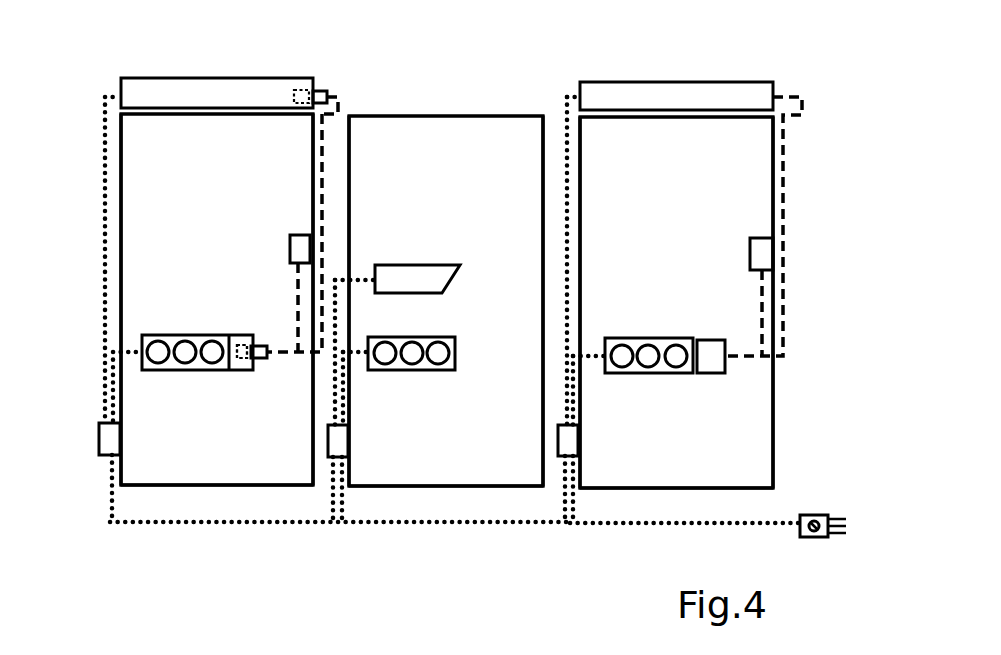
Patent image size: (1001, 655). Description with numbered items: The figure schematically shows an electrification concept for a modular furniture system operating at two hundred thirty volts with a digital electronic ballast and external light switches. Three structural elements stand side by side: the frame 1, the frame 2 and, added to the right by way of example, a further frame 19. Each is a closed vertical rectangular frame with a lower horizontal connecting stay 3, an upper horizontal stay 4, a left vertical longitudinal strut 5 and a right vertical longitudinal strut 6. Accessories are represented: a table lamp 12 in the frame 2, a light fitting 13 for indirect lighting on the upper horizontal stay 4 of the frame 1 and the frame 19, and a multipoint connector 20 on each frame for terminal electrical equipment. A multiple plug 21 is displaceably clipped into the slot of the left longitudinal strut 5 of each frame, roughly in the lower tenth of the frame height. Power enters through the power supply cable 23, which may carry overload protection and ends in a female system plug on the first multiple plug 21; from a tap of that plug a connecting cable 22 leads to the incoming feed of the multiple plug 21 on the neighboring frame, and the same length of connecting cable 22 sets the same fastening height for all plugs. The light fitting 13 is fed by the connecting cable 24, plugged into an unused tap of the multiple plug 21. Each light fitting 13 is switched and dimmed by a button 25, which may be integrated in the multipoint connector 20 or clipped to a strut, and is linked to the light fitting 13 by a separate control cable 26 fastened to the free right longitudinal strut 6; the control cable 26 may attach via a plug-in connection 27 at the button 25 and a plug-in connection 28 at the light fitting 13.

The frame 1 is at (252, 63).
The frame 2 is at (438, 105).
The further frame 19 is at (676, 72).
The lower horizontal connecting stay 3 is at (215, 485).
The upper horizontal stay 4 is at (192, 115).
The left vertical longitudinal strut 5 is at (122, 186).
The right vertical longitudinal strut 6 is at (312, 152).
The table lamp 12 is at (440, 272).
The light fitting 13 is at (157, 86).
The multipoint connector 20 is at (171, 371).
The multiple plug 21 is at (99, 439).
The connecting cable 22 is at (218, 523).
The power supply cable 23 is at (638, 526).
The connecting cable 24 is at (104, 194).
The button 25 is at (290, 247).
The control cable 26 is at (320, 207).
The plug-in connection 27 is at (259, 345).
The plug-in connection 28 is at (324, 82).